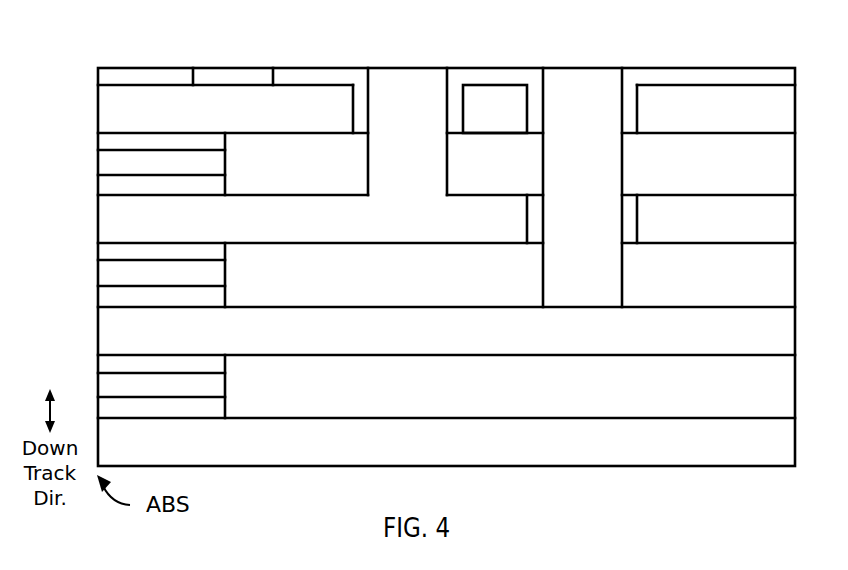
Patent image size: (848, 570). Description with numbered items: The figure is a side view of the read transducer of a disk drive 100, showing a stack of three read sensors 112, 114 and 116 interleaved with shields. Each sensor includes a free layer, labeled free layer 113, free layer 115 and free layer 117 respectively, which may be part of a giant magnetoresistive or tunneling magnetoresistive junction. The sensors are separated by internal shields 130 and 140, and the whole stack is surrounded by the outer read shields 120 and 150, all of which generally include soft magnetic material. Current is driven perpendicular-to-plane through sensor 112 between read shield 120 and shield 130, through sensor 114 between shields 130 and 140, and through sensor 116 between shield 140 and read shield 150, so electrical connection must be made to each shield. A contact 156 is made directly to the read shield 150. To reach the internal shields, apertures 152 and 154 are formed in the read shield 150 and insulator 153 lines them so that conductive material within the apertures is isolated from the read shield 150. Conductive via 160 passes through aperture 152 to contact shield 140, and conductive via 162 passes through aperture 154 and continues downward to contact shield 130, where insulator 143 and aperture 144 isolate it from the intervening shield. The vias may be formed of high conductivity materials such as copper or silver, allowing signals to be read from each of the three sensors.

The disk drive 100 is at (110, 33).
The read sensor 112 is at (414, 372).
The free layer 113 is at (161, 385).
The read sensor 114 is at (405, 262).
The free layer 115 is at (161, 273).
The read sensor 116 is at (405, 151).
The free layer 117 is at (161, 163).
The read shield 120 is at (316, 441).
The shield 130 is at (446, 337).
The shield 140 is at (446, 219).
The insulator 143 is at (628, 243).
The aperture 144 is at (637, 270).
The read shield 150 is at (446, 109).
The aperture 152 is at (418, 56).
The insulator 153 is at (318, 67).
The aperture 154 is at (575, 52).
The contact 156 is at (242, 67).
The conductive via 160 is at (407, 131).
The conductive via 162 is at (582, 187).